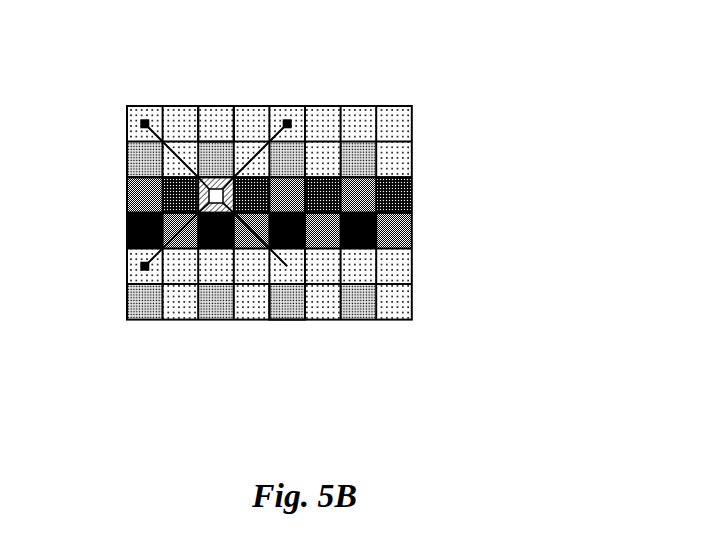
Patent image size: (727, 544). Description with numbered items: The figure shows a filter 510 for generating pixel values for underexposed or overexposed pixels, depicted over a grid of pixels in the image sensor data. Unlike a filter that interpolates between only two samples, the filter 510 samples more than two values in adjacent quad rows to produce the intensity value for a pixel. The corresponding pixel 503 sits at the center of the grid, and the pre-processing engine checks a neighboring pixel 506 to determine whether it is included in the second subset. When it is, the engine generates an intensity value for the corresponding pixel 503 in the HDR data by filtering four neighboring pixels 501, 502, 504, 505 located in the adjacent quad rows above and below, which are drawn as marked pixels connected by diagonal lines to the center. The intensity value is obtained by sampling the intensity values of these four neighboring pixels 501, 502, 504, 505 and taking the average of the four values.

The neighboring pixel 501 is at (127, 128).
The neighboring pixel 502 is at (127, 268).
The corresponding pixel 503 is at (127, 193).
The neighboring pixel 504 is at (287, 105).
The neighboring pixel 505 is at (282, 320).
The neighboring pixel 506 is at (217, 105).
The filter 510 is at (371, 181).